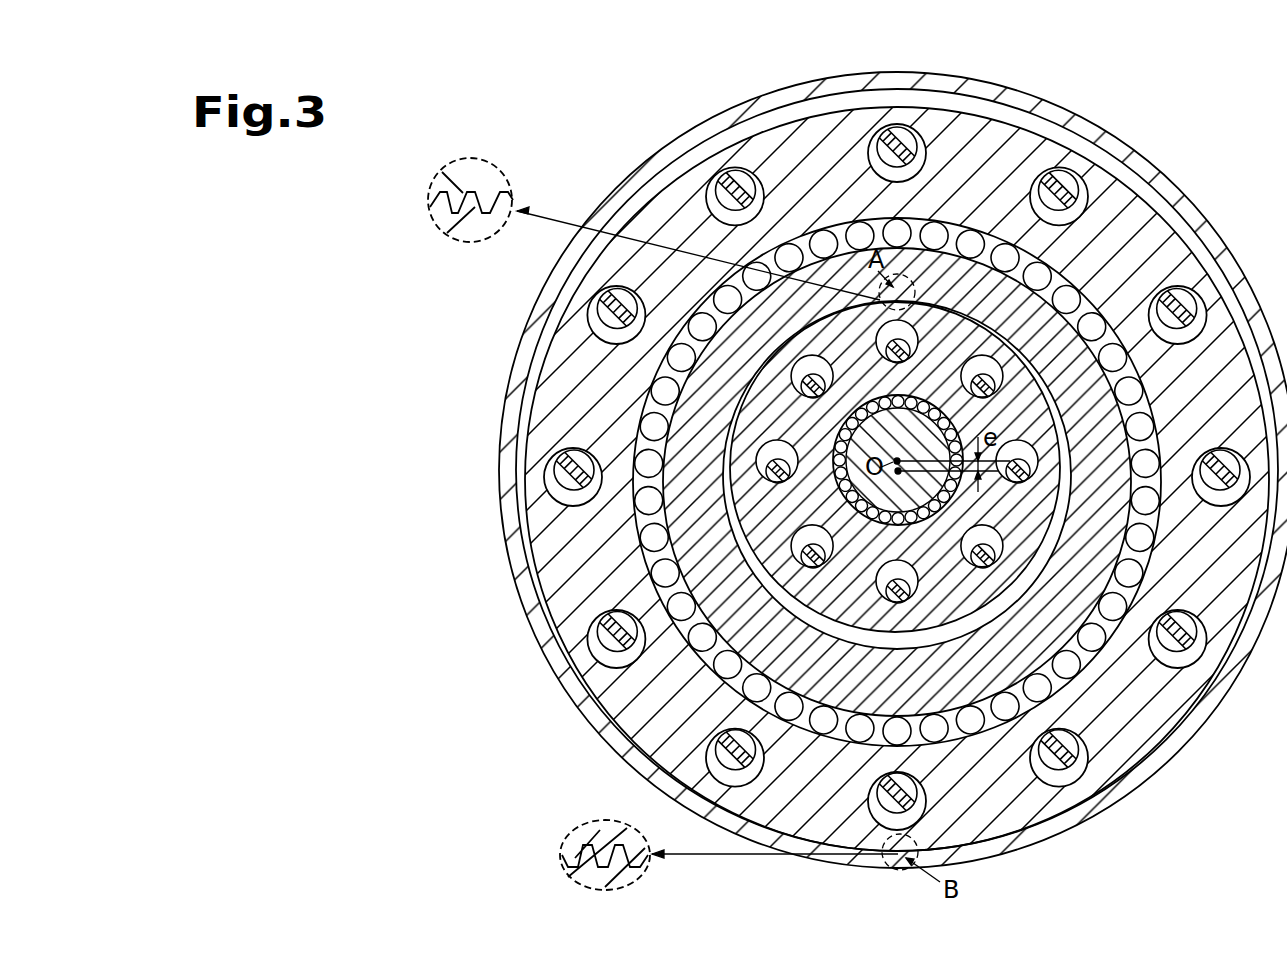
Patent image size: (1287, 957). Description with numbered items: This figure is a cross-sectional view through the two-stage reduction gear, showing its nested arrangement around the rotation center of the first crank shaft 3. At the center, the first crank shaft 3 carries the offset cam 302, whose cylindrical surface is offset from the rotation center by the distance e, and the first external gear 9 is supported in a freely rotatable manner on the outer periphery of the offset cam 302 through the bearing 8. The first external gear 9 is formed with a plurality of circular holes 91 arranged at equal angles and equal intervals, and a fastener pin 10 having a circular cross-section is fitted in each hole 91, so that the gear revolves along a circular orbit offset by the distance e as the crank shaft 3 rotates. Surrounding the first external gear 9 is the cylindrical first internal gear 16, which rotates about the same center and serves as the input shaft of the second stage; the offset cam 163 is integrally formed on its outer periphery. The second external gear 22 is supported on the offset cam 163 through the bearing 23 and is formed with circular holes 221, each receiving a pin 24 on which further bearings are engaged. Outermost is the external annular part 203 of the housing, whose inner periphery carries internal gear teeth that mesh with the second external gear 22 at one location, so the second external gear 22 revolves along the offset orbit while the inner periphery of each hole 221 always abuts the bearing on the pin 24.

The first crank shaft 3 is at (950, 420).
The bearing 8 is at (924, 404).
The first external gear 9 is at (957, 303).
The fastener pin 10 is at (915, 336).
The first internal gear 16 is at (910, 218).
The second external gear 22 is at (1033, 836).
The bearing 23 is at (973, 236).
The pin 24 is at (916, 148).
The hole 91 is at (882, 328).
The offset cam 163 is at (835, 232).
The external annular part 203 is at (990, 862).
The hole 221 is at (924, 163).
The offset cam 302 is at (878, 400).